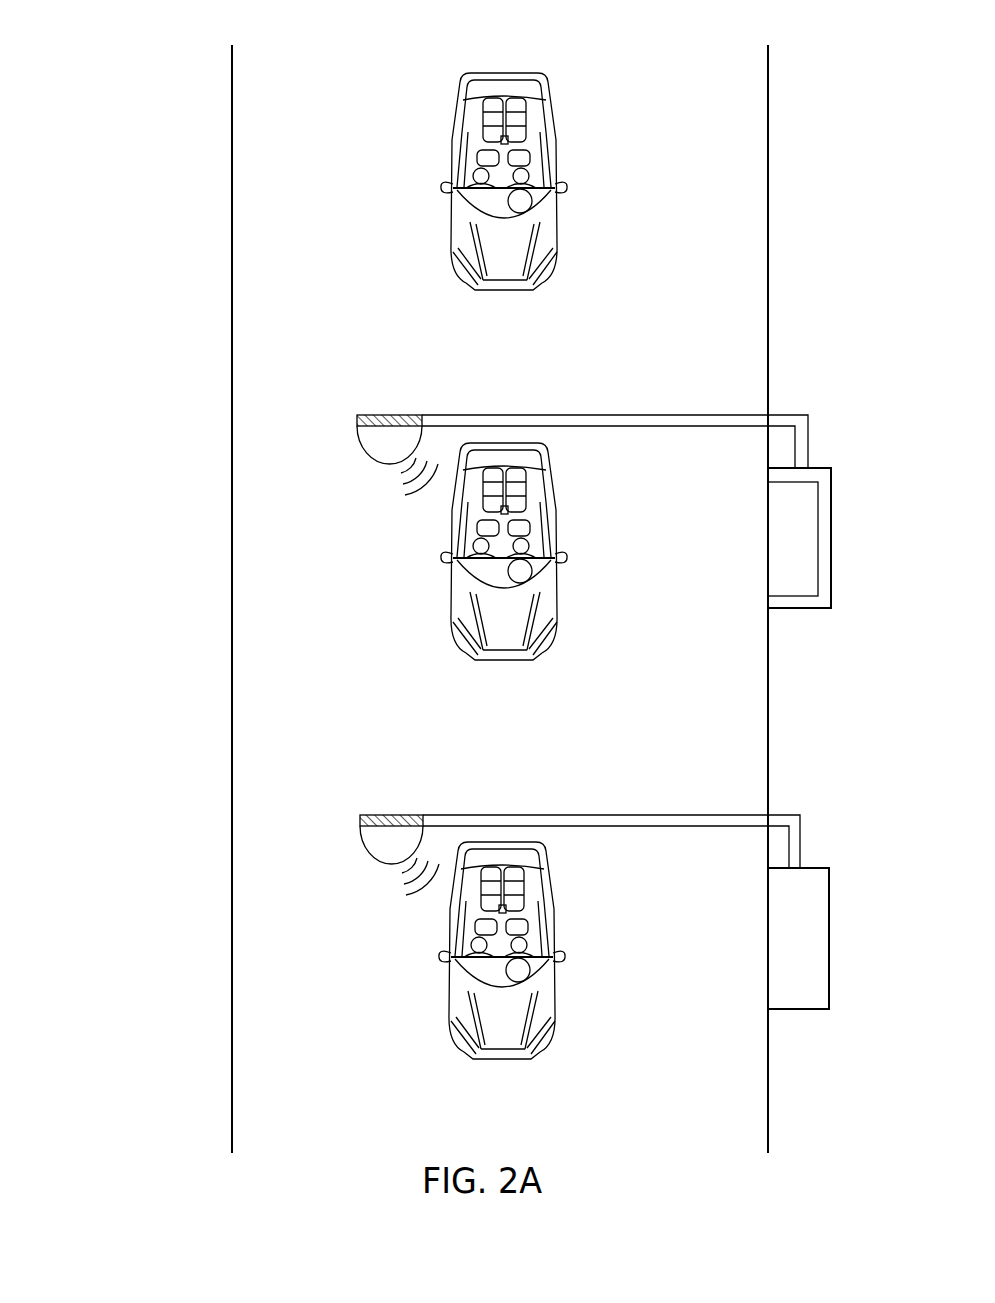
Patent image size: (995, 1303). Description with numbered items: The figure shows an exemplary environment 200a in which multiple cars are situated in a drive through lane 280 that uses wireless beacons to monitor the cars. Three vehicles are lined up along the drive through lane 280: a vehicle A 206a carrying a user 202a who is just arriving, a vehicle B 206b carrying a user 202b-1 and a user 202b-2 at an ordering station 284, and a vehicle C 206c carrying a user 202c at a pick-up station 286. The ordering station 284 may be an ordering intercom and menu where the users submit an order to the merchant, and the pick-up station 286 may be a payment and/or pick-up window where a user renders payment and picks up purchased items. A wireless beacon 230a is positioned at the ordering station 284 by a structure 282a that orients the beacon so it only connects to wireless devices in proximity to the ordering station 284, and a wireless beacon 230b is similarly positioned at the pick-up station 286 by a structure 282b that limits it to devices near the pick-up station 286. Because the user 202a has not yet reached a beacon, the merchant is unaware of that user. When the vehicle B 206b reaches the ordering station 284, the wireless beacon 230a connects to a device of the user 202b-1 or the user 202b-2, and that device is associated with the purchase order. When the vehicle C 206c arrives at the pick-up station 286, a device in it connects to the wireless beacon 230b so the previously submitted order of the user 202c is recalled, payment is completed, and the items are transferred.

The environment 200a is at (806, 27).
The drive through lane 280 is at (172, 217).
The user 202a is at (541, 168).
The vehicle A 206a is at (588, 317).
The wireless beacon 230a is at (381, 409).
The structure 282a is at (813, 410).
The ordering station 284 is at (836, 527).
The user 202b-1 is at (469, 542).
The user 202b-2 is at (540, 539).
The vehicle B 206b is at (588, 689).
The wireless beacon 230b is at (389, 805).
The structure 282b is at (801, 812).
The pick-up station 286 is at (834, 929).
The user 202c is at (534, 949).
The vehicle C 206c is at (557, 1104).